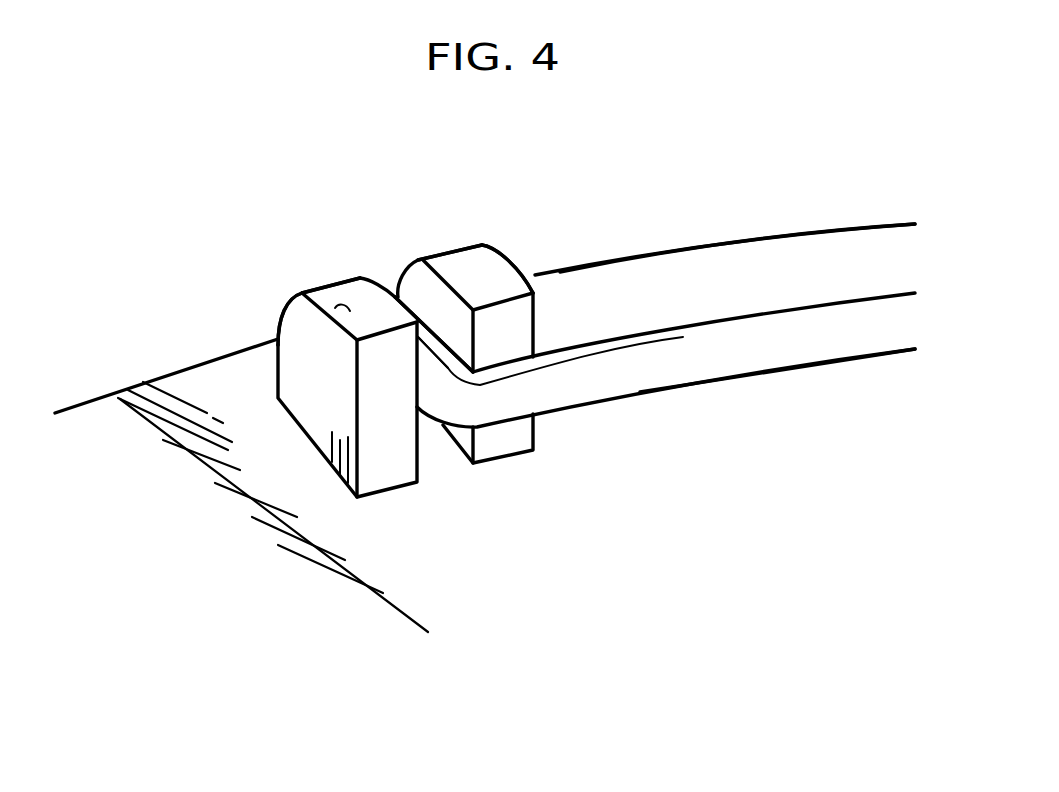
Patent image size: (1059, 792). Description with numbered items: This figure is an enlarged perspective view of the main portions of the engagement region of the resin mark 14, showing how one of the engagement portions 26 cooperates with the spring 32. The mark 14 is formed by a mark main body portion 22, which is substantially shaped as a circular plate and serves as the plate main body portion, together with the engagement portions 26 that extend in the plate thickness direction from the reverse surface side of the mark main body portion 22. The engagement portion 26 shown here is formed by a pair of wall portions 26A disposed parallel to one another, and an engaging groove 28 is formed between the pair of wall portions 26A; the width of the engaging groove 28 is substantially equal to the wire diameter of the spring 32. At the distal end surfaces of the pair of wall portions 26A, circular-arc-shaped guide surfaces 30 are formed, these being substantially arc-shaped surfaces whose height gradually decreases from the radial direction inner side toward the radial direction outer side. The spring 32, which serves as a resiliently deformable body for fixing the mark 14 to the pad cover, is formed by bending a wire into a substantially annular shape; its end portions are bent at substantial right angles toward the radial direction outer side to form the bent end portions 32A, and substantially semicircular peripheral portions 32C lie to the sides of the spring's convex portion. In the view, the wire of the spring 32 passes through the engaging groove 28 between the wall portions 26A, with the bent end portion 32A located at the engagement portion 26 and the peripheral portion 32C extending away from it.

The mark 14 is at (757, 230).
The mark main body portion 22 is at (662, 277).
The engagement portion 26 is at (443, 246).
The wall portion 26A is at (288, 317).
The engaging groove 28 is at (377, 281).
The circular-arc-shaped guide surface 30 is at (299, 312).
The spring 32 is at (673, 395).
The bent end portion 32A is at (412, 295).
The peripheral portion 32C is at (797, 350).